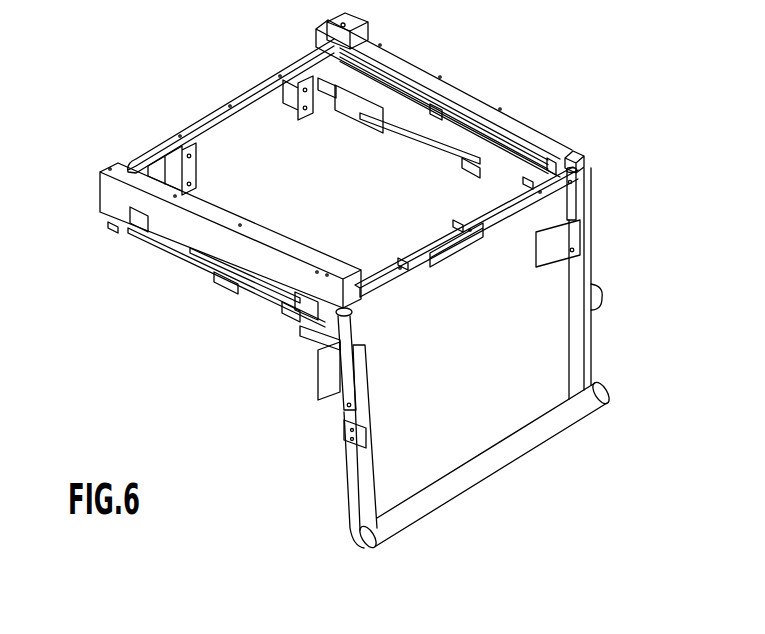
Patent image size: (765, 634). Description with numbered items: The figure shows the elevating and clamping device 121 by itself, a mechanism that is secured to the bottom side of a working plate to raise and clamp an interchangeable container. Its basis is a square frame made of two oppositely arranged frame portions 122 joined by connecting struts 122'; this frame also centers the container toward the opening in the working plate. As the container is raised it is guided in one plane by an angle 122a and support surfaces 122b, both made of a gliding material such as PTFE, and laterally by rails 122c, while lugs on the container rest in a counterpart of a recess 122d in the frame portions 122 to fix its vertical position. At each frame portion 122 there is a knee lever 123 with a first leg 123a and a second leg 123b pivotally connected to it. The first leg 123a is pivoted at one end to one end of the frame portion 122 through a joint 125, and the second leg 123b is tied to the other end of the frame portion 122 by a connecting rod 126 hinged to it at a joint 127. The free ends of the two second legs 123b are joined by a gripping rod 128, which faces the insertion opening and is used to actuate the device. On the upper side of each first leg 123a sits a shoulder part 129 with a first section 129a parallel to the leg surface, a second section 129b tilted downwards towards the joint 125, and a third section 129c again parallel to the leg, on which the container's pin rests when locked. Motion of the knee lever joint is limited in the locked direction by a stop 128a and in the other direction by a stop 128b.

The elevating and clamping device 121 is at (582, 152).
The frame portion 122 is at (336, 164).
The connecting strut 122' is at (353, 168).
The angle 122a is at (447, 250).
The support surface 122b is at (187, 152).
The rail 122c is at (437, 108).
The recess 122d is at (140, 217).
The knee lever 123 is at (452, 283).
The first leg 123a is at (385, 108).
The second leg 123b is at (592, 352).
The joint 125 is at (323, 88).
The connecting rod 126 is at (593, 197).
The joint 127 is at (583, 170).
The gripping rod 128 is at (530, 453).
The stop 128a is at (550, 245).
The stop 128b is at (604, 299).
The shoulder part 129 is at (512, 160).
The first section 129a is at (545, 145).
The second section 129b is at (468, 164).
The third section 129c is at (440, 142).